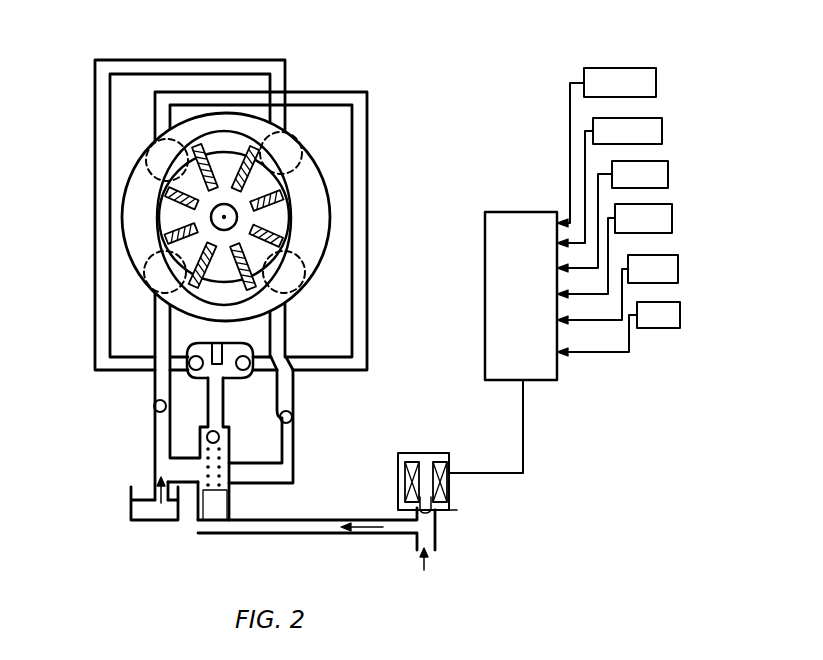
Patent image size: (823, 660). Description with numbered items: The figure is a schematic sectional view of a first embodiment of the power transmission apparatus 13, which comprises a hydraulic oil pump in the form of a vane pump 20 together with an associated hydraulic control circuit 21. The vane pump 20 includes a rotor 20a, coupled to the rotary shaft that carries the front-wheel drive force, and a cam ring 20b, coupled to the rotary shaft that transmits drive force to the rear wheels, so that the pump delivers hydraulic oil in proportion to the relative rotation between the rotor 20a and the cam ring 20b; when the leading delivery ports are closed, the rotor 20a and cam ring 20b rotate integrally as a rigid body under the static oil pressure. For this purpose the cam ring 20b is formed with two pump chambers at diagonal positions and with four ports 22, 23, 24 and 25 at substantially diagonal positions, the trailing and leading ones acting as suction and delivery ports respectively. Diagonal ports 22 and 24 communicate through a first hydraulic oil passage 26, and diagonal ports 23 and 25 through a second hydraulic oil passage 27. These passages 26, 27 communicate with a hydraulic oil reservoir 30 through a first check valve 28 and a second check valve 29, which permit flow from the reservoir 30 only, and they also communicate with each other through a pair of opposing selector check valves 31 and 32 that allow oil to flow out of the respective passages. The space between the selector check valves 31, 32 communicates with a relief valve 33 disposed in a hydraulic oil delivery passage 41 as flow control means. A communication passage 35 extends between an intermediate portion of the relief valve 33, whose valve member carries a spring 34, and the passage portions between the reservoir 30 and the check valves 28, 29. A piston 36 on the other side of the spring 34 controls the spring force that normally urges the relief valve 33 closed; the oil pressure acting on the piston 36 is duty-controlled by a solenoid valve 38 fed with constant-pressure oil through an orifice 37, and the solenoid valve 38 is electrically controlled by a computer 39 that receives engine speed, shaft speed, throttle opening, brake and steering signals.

The power transmission apparatus 13 is at (362, 65).
The vane pump 20 is at (343, 155).
The rotor 20a is at (276, 217).
The cam ring 20b is at (313, 233).
The hydraulic control circuit 21 is at (380, 374).
The port 22 is at (150, 276).
The port 23 is at (146, 160).
The port 24 is at (286, 134).
The port 25 is at (300, 273).
The first hydraulic oil passage 26 is at (147, 42).
The second hydraulic oil passage 27 is at (232, 91).
The first check valve 28 is at (153, 406).
The second check valve 29 is at (295, 413).
The hydraulic oil reservoir 30 is at (138, 523).
The selector check valve 31 is at (198, 377).
The selector check valve 32 is at (246, 362).
The relief valve 33 is at (244, 450).
The spring 34 is at (203, 455).
The communication passage 35 is at (192, 476).
The piston 36 is at (212, 512).
The orifice 37 is at (435, 545).
The solenoid valve 38 is at (425, 462).
The computer 39 is at (534, 303).
The hydraulic oil delivery passage 41 is at (225, 398).